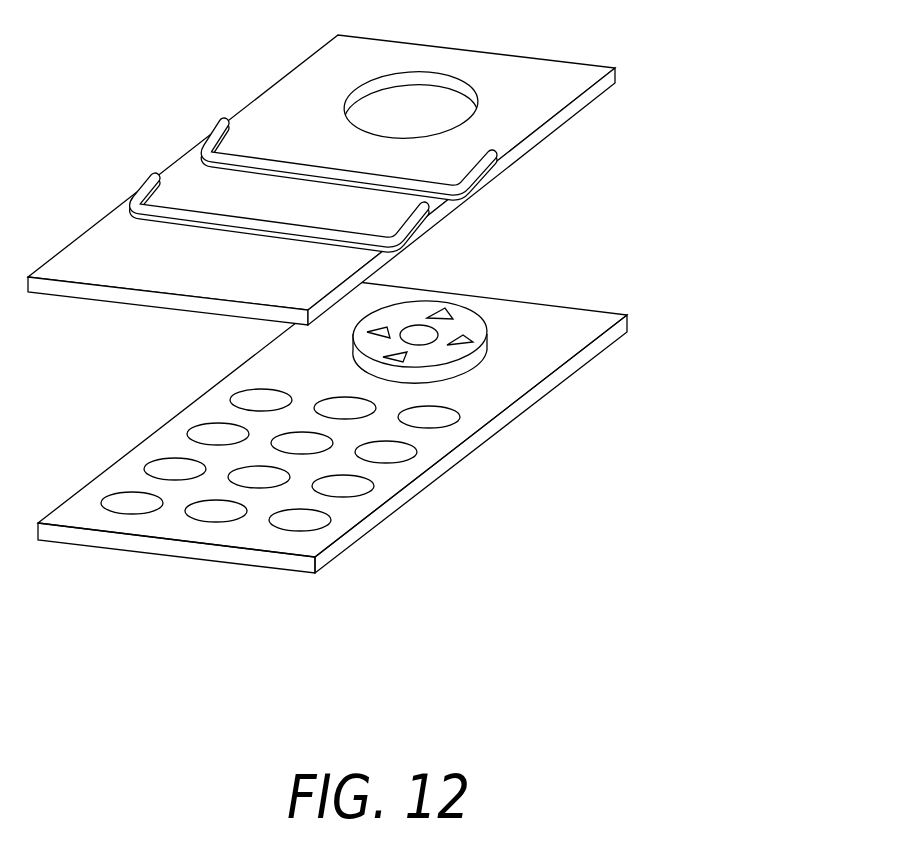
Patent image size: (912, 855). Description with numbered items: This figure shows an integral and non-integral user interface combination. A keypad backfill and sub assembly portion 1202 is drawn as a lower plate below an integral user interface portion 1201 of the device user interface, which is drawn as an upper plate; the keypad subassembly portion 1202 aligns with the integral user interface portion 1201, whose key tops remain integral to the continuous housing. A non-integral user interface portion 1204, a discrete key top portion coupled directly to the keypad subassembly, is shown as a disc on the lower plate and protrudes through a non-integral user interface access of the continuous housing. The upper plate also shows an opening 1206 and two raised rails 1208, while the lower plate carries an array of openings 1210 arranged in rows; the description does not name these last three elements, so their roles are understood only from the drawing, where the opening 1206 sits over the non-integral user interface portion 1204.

The integral user interface portion 1201 is at (614, 67).
The keypad backfill and sub assembly portion 1202 is at (612, 343).
The non-integral user interface portion 1204 is at (465, 318).
The aperture 1206 is at (402, 108).
The guide ribs 1208 is at (216, 124).
The key openings 1210 is at (417, 452).